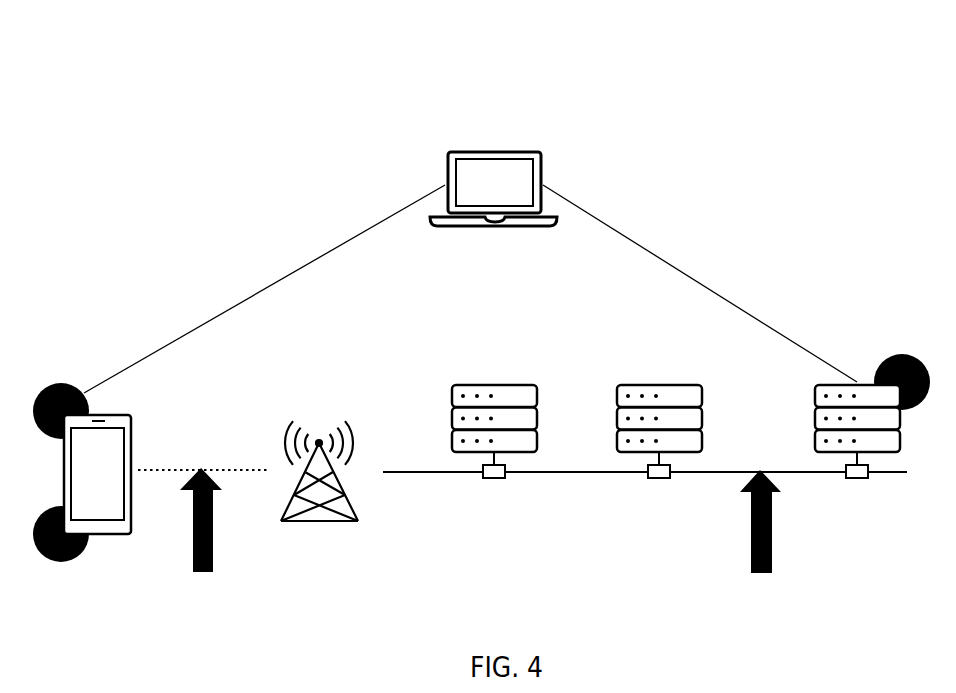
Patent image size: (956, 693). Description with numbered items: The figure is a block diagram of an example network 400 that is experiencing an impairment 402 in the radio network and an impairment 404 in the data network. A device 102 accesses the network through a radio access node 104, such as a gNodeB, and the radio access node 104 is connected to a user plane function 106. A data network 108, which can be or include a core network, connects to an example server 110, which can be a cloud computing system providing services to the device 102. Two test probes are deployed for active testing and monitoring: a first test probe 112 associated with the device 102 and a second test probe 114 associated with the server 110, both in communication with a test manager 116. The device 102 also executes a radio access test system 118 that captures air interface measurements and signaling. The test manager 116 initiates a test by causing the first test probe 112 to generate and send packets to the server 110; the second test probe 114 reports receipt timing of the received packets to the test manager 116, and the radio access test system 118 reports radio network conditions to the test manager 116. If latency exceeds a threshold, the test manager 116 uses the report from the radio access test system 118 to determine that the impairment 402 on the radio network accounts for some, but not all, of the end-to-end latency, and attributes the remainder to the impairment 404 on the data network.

The network 400 is at (371, 46).
The device 102 is at (131, 440).
The radio access node 104 is at (300, 510).
The user plane function 106 is at (489, 384).
The data network 108 is at (654, 384).
The server 110 is at (813, 412).
The first test probe 112 is at (67, 384).
The second test probe 114 is at (893, 353).
The test manager 116 is at (495, 148).
The radio access test system 118 is at (70, 558).
The impairment 402 is at (205, 572).
The impairment 404 is at (762, 573).